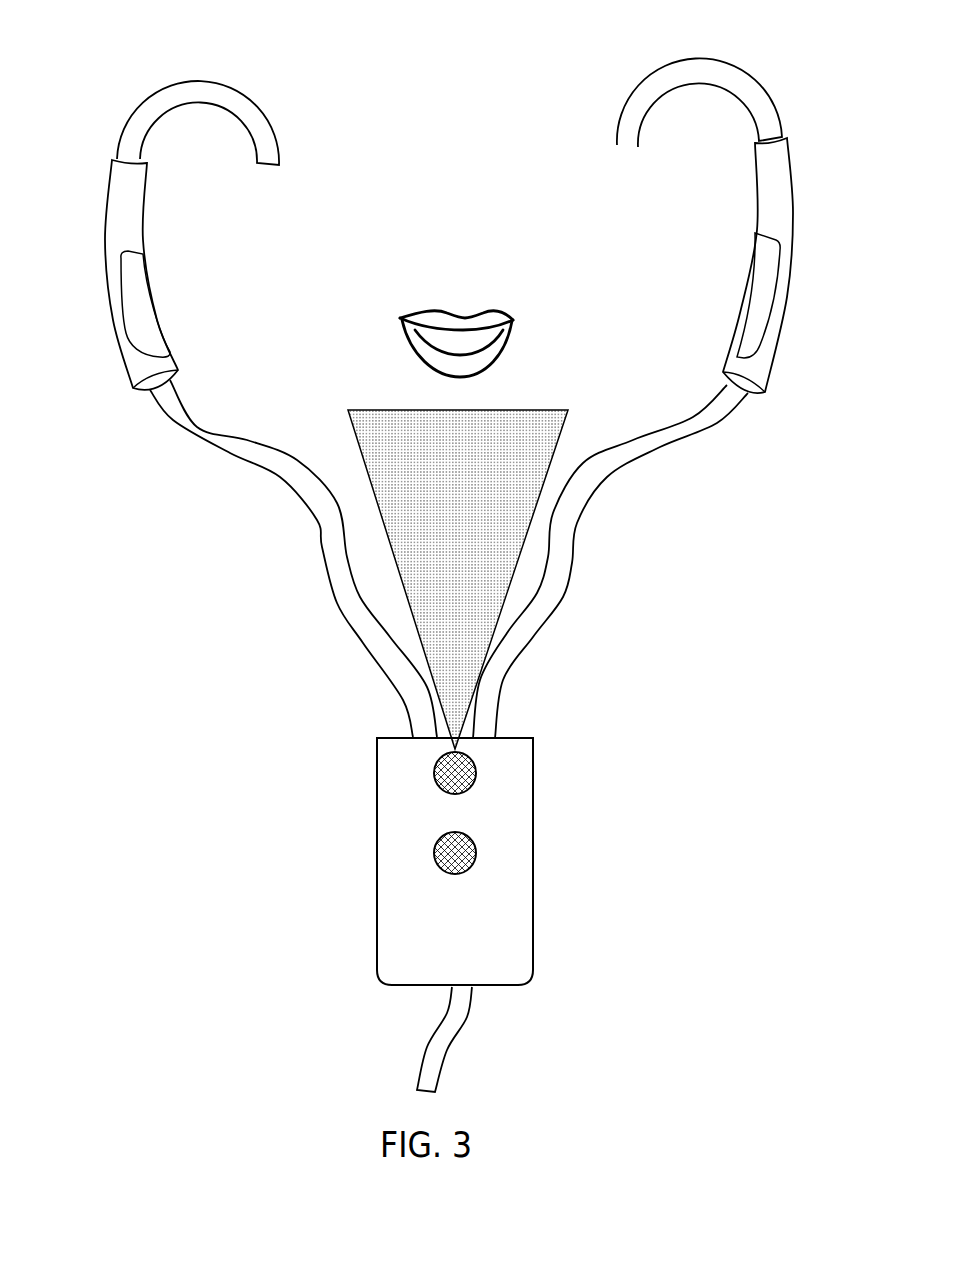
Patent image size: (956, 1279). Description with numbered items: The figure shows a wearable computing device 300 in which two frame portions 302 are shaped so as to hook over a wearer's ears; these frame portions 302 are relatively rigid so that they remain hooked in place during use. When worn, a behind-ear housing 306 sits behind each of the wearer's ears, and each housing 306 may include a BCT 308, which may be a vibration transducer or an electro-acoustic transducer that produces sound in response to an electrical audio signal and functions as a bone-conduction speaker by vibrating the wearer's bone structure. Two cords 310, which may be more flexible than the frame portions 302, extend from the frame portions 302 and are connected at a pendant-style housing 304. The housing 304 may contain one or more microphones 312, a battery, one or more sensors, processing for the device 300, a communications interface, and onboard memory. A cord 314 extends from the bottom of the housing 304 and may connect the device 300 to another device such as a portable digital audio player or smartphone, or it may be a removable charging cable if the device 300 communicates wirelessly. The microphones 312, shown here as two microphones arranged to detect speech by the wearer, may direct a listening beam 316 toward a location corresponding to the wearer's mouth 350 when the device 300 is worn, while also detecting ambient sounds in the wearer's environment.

The wearable computing device 300 is at (122, 63).
The frame portions 302 is at (200, 85).
The pendant-style housing 304 is at (535, 793).
The behind-ear housing 306 is at (108, 222).
The BCT 308 is at (155, 315).
The cords 310 is at (348, 615).
The microphones 312 is at (435, 780).
The cord 314 is at (458, 1033).
The listening beam 316 is at (370, 418).
The wearer's mouth 350 is at (470, 316).